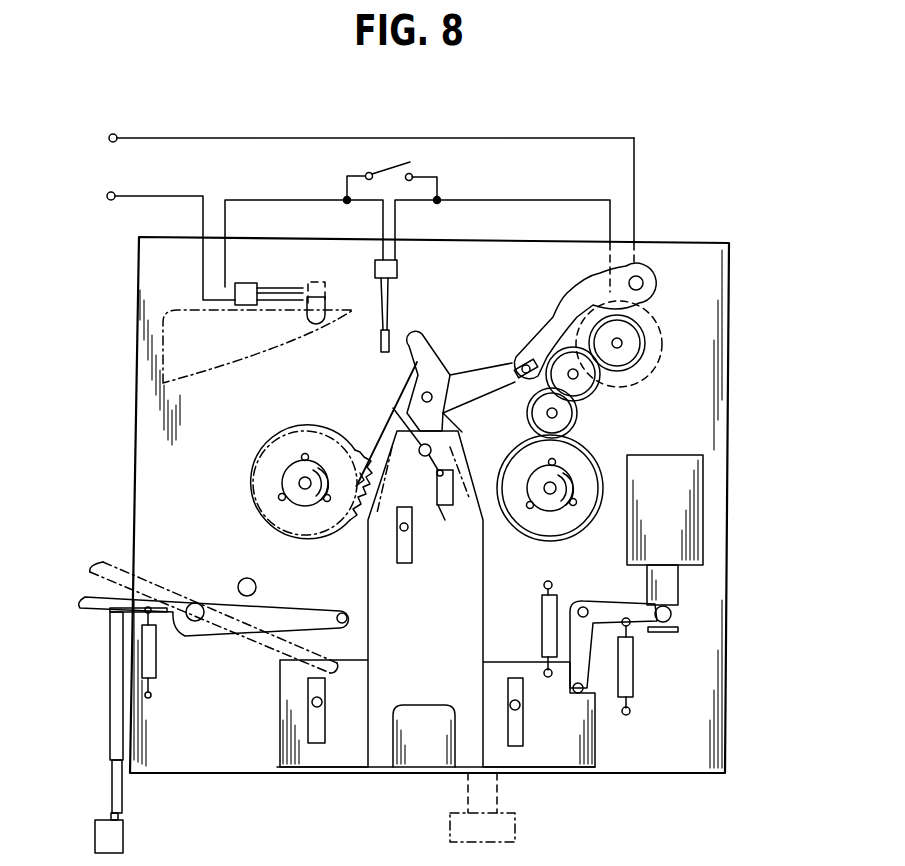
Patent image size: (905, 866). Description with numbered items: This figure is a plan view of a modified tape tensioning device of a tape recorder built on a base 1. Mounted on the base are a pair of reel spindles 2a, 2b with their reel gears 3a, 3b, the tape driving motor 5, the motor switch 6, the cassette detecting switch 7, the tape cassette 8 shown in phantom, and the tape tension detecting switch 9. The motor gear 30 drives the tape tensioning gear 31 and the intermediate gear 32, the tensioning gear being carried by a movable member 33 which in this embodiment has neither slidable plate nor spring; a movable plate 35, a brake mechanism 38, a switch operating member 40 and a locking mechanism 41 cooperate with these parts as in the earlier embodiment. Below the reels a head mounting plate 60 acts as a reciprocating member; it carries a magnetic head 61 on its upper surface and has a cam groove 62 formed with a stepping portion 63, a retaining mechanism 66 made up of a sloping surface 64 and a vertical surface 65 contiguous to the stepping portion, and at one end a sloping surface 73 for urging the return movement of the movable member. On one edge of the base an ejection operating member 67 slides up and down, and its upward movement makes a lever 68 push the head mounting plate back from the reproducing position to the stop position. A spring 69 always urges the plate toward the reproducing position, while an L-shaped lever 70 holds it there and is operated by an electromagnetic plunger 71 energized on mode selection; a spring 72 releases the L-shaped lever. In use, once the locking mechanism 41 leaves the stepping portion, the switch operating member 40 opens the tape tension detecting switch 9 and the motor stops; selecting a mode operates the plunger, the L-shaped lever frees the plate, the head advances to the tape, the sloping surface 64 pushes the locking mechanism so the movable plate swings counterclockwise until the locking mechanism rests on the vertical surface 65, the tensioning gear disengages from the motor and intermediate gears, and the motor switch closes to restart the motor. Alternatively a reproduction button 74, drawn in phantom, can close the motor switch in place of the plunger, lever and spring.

The base 1 is at (228, 773).
The reel spindle 2a is at (542, 508).
The reel spindle 2b is at (282, 479).
The reel gear 3a is at (563, 537).
The reel gear 3b is at (250, 510).
The tape driving motor 5 is at (657, 317).
The motor switch 6 is at (393, 165).
The cassette detecting switch 7 is at (249, 283).
The tape cassette 8 is at (230, 367).
The tape tension detecting switch 9 is at (398, 263).
The motor gear 30 is at (647, 337).
The tape tensioning gear 31 is at (600, 388).
The intermediate gear 32 is at (580, 420).
The movable member 33 is at (567, 293).
The movable plate 35 is at (482, 368).
The brake mechanism 38 is at (357, 460).
The switch operating member 40 is at (420, 334).
The locking mechanism 41 is at (397, 412).
The head mounting plate 60 is at (370, 575).
The magnetic head 61 is at (420, 705).
The cam groove 62 is at (453, 500).
The stepping portion 63 is at (421, 458).
The sloping surface 64 is at (420, 460).
The vertical surface 65 is at (445, 505).
The retaining mechanism 66 is at (473, 606).
The ejection operating member 67 is at (108, 742).
The lever 68 is at (240, 637).
The spring 69 is at (542, 642).
The L-shaped lever 70 is at (607, 603).
The electromagnetic plunger 71 is at (705, 520).
The spring 72 is at (633, 658).
The sloping surface 73 is at (462, 432).
The reproduction button 74 is at (515, 817).